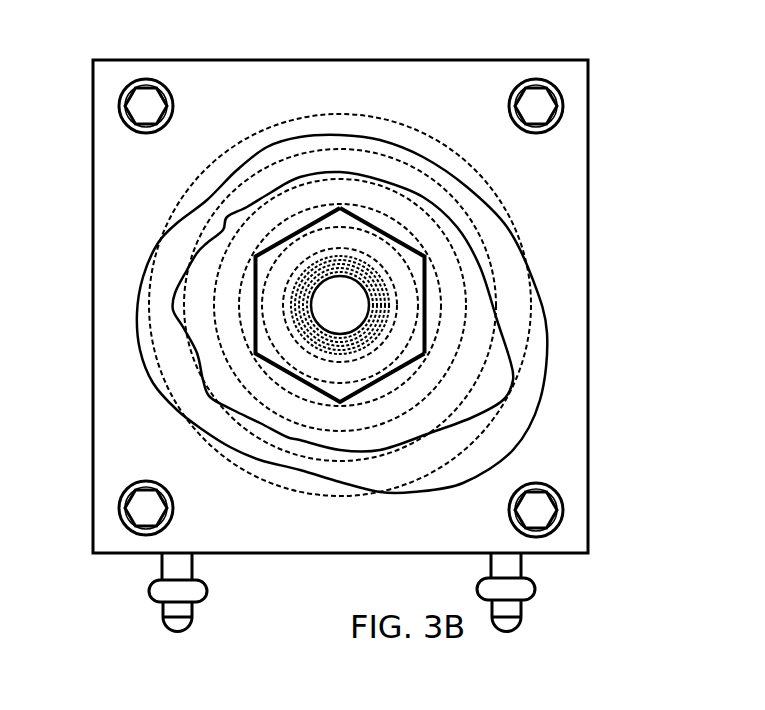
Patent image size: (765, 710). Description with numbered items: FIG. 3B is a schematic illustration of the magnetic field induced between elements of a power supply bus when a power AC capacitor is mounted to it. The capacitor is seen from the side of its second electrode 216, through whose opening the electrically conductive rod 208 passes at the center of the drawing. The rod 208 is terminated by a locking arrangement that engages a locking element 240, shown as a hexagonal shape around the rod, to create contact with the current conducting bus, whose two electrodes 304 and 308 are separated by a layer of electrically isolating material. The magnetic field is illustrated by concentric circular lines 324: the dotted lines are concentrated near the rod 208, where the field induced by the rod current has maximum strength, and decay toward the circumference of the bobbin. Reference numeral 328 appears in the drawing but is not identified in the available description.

The second electrode 216 is at (107, 90).
The locking element 240 is at (340, 208).
The concentric circular lines 324 is at (403, 123).
The seal corner 328 is at (428, 265).
The electrode 308 is at (158, 245).
The electrode 304 is at (418, 435).
The electrically conductive rod 208 is at (338, 307).